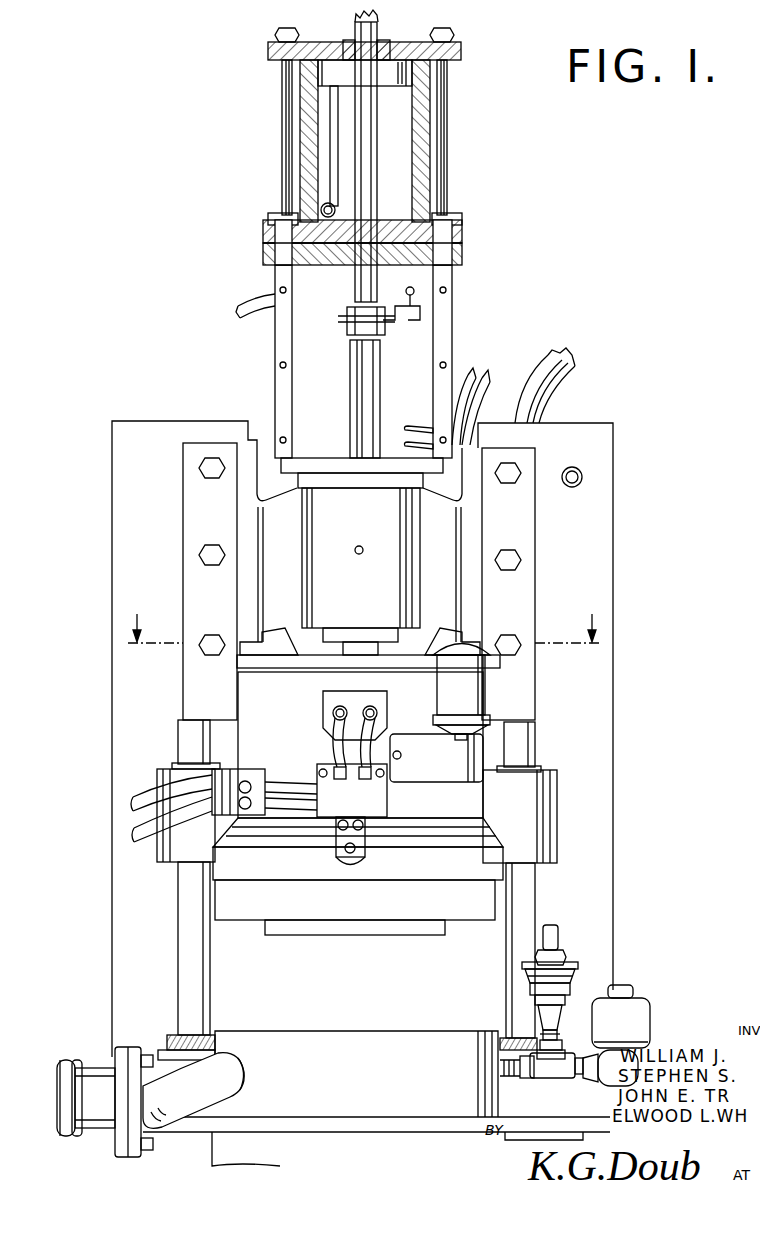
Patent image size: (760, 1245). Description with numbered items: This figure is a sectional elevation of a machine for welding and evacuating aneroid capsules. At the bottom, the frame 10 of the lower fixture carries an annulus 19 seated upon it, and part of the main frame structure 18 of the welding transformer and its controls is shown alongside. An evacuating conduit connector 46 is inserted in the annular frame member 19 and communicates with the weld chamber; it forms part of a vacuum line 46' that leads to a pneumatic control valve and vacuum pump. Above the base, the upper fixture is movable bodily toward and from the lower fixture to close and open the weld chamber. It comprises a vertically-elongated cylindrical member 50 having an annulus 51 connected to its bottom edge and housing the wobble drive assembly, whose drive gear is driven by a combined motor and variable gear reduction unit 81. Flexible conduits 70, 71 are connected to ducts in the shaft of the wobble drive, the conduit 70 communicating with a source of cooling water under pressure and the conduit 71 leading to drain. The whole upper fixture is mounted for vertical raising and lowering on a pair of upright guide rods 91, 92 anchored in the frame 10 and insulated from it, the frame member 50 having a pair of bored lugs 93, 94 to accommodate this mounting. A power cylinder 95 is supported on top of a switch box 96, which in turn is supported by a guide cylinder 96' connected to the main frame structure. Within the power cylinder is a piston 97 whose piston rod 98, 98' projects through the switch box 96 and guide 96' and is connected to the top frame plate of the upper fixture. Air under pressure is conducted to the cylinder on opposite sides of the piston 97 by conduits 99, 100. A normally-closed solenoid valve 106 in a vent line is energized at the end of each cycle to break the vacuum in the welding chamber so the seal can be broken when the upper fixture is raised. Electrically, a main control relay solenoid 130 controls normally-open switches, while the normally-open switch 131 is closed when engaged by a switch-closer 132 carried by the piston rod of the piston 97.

The frame 10 is at (212, 1157).
The main frame structure 18 is at (613, 722).
The annulus 19 is at (356, 1082).
The evacuating conduit connector 46 is at (179, 1102).
The vacuum line 46' is at (86, 1072).
The vertically-elongated cylindrical member 50 is at (292, 710).
The annulus 51 is at (392, 910).
The flexible conduit 70 is at (150, 790).
The flexible conduit 71 is at (152, 828).
The combined motor and variable gear reduction unit 81 is at (483, 690).
The upright guide rod 91 is at (178, 928).
The upright guide rod 92 is at (535, 891).
The bored lug 93 is at (157, 862).
The bored lug 94 is at (557, 829).
The power cylinder 95 is at (412, 148).
The switch box 96 is at (363, 376).
The guide cylinder 96' is at (368, 578).
The piston 97 is at (382, 88).
The piston rod 98 is at (348, 375).
The piston rod 98' is at (326, 406).
The conduit 99 is at (355, 22).
The conduit 100 is at (262, 296).
The solenoid valve 106 is at (650, 1019).
The main control relay solenoid 130 is at (513, 392).
The switch 131 is at (405, 435).
The switch-closer 132 is at (412, 322).